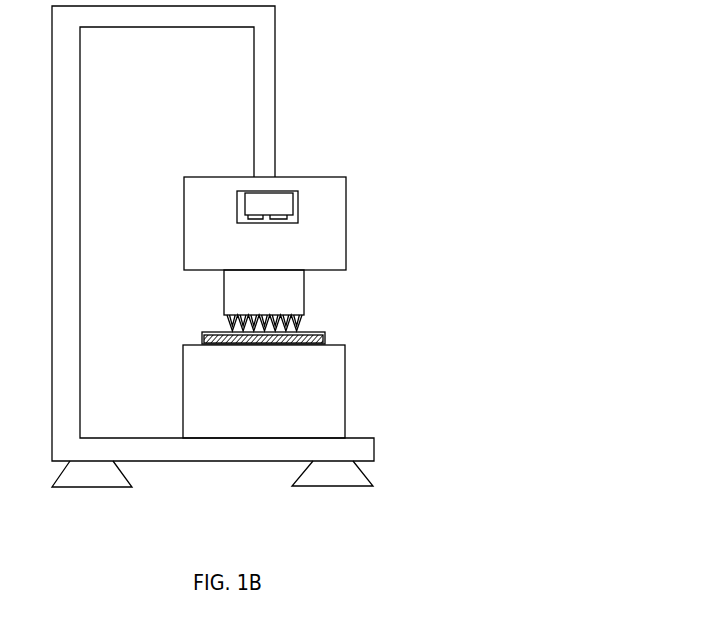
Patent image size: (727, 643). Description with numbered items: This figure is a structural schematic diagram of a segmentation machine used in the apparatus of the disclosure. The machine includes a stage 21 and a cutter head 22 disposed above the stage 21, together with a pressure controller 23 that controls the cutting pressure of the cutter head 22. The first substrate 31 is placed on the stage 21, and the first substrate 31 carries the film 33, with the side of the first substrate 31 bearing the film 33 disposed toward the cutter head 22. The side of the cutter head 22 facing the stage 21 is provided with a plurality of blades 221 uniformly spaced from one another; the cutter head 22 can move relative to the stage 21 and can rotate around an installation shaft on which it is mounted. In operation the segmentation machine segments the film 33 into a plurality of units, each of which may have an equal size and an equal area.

The stage 21 is at (333, 393).
The cutter head 22 is at (233, 291).
The blades 221 is at (228, 324).
The pressure controller 23 is at (277, 208).
The first substrate 31 is at (327, 341).
The film 33 is at (325, 333).